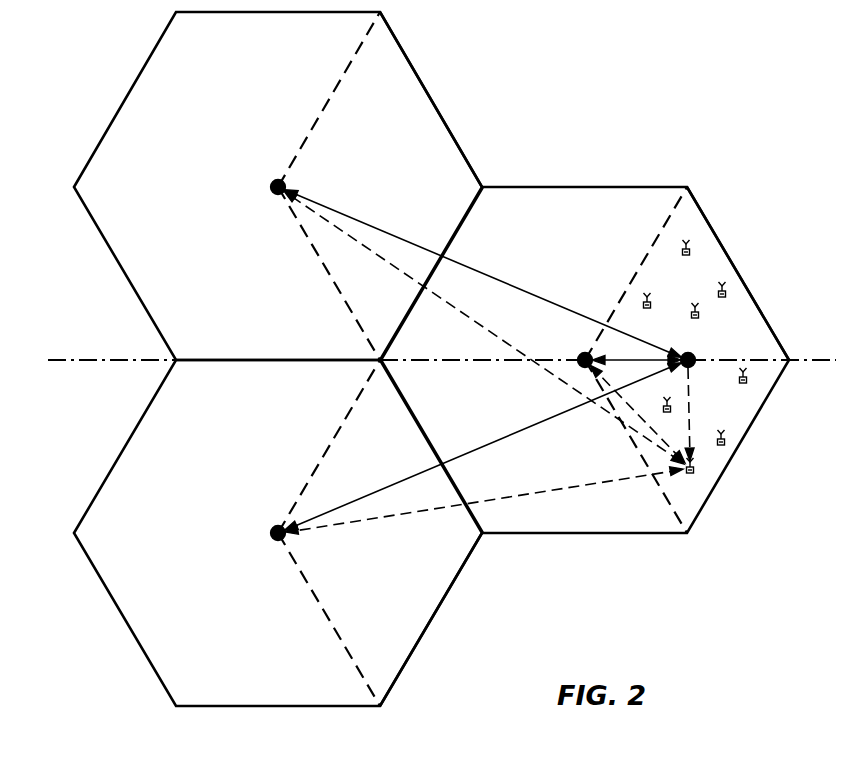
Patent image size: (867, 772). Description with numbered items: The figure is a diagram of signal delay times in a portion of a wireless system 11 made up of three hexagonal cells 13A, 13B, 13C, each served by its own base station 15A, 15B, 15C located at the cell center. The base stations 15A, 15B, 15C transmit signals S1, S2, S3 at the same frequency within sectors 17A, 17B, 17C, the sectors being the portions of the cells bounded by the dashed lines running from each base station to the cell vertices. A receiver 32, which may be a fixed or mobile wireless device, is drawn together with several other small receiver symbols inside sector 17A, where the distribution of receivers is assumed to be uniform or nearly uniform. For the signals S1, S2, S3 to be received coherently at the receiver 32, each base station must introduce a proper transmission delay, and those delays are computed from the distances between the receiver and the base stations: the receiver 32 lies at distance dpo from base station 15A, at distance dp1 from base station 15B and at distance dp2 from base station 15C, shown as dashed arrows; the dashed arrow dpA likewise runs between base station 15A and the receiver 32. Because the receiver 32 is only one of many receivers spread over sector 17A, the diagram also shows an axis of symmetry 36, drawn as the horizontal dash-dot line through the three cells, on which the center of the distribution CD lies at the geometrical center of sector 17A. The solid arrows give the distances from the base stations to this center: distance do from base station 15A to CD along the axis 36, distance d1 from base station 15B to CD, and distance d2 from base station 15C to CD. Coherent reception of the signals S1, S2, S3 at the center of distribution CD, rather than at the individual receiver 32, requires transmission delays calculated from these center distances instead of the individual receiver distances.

The wireless system 11 is at (576, 75).
The cell 13A is at (605, 187).
The cell 13B is at (133, 82).
The cell 13C is at (142, 417).
The base station 15A is at (577, 357).
The base station 15B is at (270, 182).
The base station 15C is at (270, 528).
The sector 17A is at (723, 248).
The sector 17B is at (431, 100).
The sector 17C is at (448, 588).
The receiver 32 is at (698, 470).
The axis of symmetry 36 is at (798, 366).
The center of the distribution CD is at (694, 353).
The signal S1 is at (603, 330).
The signal S2 is at (473, 247).
The signal S3 is at (343, 497).
The distance d1 is at (537, 295).
The distance d2 is at (486, 446).
The distance do is at (593, 345).
The distance dp1 is at (365, 248).
The distance dp2 is at (572, 488).
The distance from mobile to base station A dpA is at (637, 414).
The distance dpo is at (667, 441).